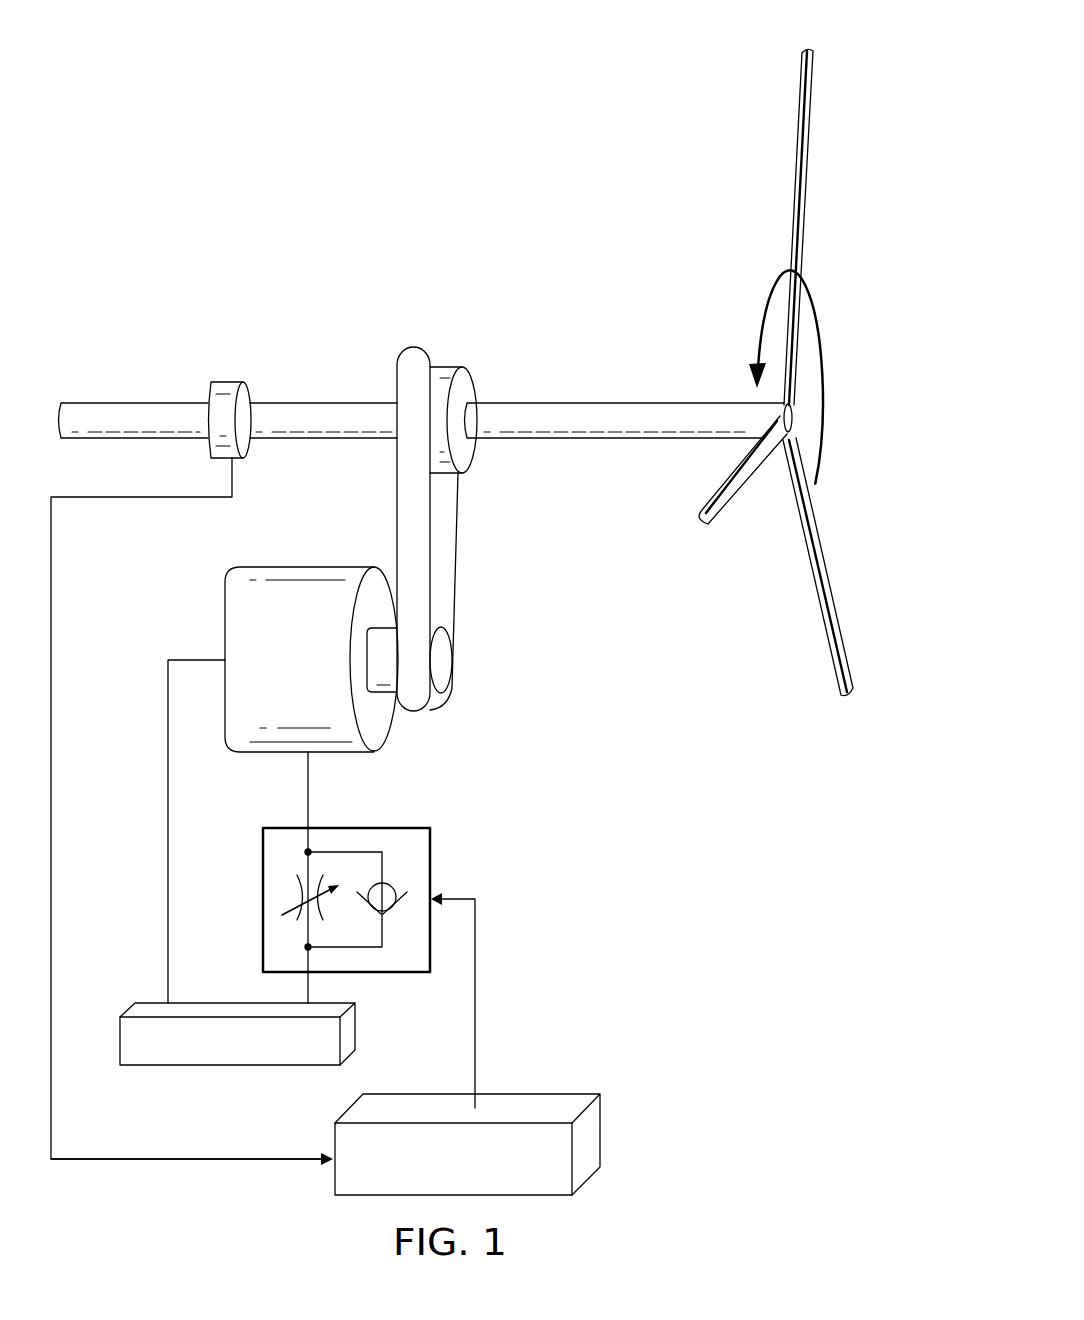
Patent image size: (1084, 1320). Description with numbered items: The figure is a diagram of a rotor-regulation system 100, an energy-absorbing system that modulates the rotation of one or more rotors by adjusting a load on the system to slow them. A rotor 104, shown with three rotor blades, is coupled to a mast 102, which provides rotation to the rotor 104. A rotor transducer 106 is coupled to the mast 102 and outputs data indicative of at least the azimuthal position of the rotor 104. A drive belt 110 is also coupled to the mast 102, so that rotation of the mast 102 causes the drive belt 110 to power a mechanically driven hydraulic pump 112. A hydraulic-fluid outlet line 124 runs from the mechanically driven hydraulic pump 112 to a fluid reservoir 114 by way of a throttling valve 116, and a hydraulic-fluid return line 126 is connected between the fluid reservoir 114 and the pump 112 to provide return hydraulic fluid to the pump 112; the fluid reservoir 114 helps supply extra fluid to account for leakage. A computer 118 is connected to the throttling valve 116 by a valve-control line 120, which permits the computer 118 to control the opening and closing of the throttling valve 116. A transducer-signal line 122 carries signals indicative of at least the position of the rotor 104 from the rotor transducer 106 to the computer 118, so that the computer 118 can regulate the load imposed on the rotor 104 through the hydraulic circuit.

The rotor-regulation system 100 is at (121, 123).
The mast 102 is at (624, 403).
The rotor 104 is at (812, 372).
The rotor transducer 106 is at (224, 382).
The drive belt 110 is at (455, 547).
The mechanically driven hydraulic pump 112 is at (282, 753).
The fluid reservoir 114 is at (230, 1066).
The throttling valve 116 is at (262, 910).
The computer 118 is at (602, 1135).
The valve-control line 120 is at (476, 1003).
The transducer-signal line 122 is at (193, 1160).
The hydraulic-fluid outlet line 124 is at (310, 793).
The fluid line 126 is at (168, 833).